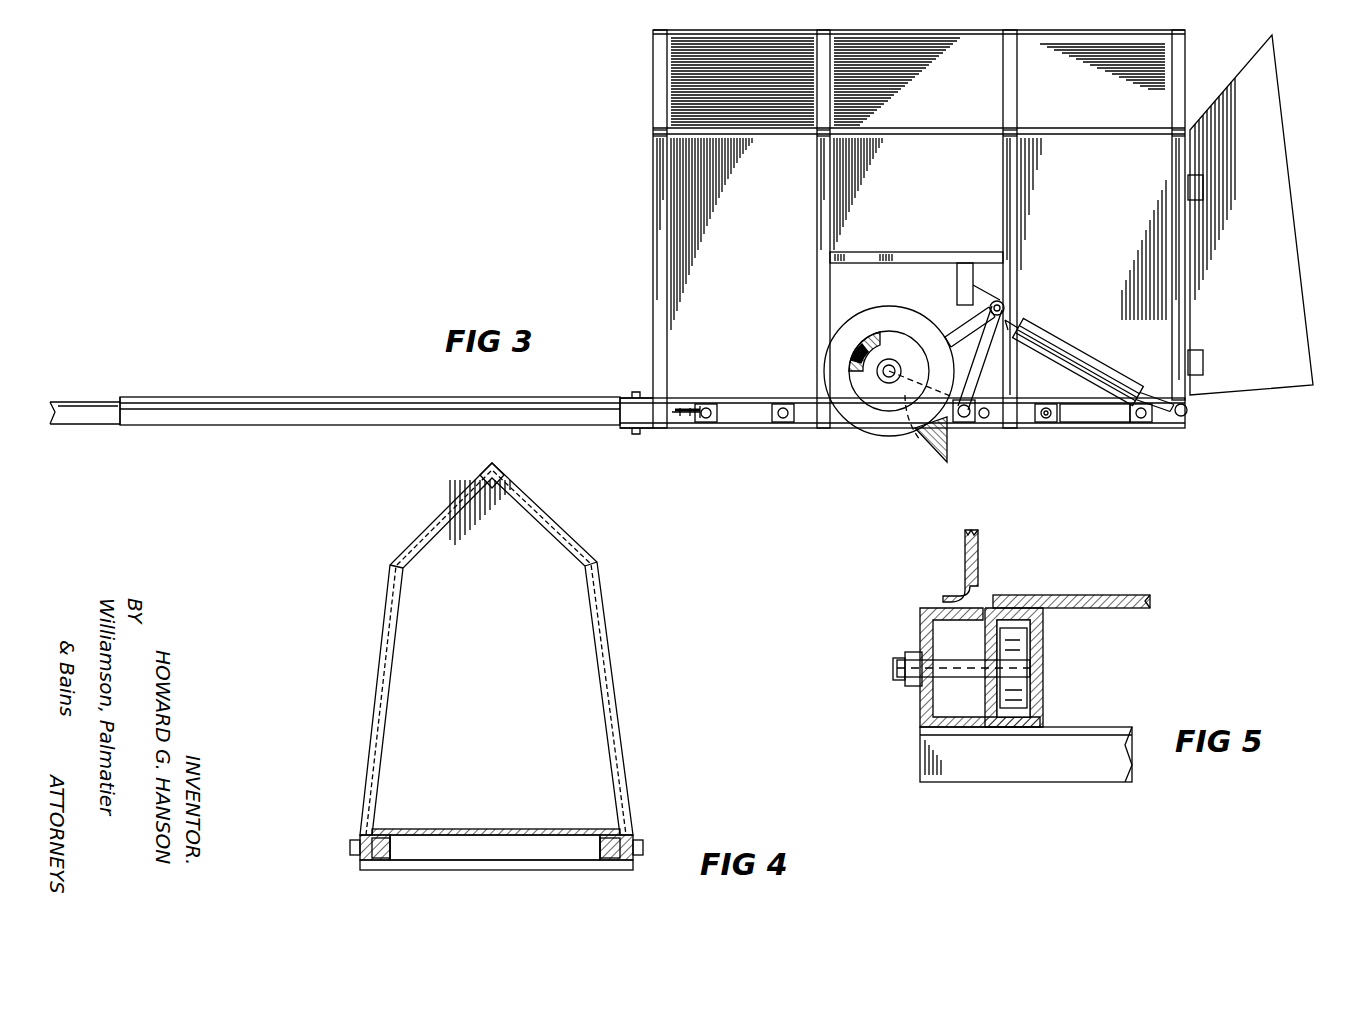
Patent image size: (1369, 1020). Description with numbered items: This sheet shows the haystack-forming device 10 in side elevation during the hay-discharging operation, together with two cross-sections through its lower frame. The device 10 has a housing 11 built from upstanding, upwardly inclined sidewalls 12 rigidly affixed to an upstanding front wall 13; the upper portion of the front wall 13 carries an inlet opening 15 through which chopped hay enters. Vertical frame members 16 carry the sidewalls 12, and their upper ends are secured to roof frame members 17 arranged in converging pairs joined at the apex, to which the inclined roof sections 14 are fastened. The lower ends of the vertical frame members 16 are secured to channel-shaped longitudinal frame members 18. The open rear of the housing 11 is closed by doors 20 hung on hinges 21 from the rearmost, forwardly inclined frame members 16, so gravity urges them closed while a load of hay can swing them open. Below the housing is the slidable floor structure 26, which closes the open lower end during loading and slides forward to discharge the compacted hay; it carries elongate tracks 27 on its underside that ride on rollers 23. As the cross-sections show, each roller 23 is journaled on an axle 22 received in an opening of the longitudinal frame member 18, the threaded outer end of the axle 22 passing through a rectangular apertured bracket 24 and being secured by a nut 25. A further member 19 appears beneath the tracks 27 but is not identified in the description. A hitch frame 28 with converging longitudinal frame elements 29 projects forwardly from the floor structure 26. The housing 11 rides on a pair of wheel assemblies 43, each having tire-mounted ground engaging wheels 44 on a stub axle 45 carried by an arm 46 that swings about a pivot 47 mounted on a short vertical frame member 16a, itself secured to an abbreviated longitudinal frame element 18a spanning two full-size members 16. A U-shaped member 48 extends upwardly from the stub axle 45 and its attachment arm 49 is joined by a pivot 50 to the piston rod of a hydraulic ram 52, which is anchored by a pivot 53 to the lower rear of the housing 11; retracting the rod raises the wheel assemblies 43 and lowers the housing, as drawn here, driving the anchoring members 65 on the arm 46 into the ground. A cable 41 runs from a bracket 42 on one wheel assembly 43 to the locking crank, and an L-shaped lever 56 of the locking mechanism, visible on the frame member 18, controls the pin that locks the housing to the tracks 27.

In FIG. 3, the haystack-forming device 10 is at (450, 142).
In FIG. 3, the housing 11 is at (650, 165).
In FIG. 4, the housing 11 is at (378, 660).
In FIG. 3, the sidewalls 12 is at (672, 245).
In FIG. 4, the sidewalls 12 is at (372, 765).
In FIG. 5, the sidewalls 12 is at (979, 570).
In FIG. 4, the front wall 13 is at (482, 650).
In FIG. 3, the roof sections 14 is at (655, 113).
In FIG. 4, the roof sections 14 is at (392, 558).
In FIG. 4, the inlet opening 15 is at (487, 505).
In FIG. 3, the vertical frame members 16 is at (654, 208).
In FIG. 4, the vertical frame members 16 is at (378, 722).
In FIG. 3, the short vertical frame member 16a is at (1013, 270).
In FIG. 3, the roof frame members 17 is at (655, 70).
In FIG. 4, the roof frame members 17 is at (427, 530).
In FIG. 3, the longitudinal frame members 18 is at (1112, 410).
In FIG. 4, the longitudinal frame members 18 is at (365, 835).
In FIG. 5, the longitudinal frame members 18 is at (935, 735).
In FIG. 3, the longitudinal frame element 18a is at (860, 258).
In FIG. 3, the floor 19 is at (637, 395).
In FIG. 4, the floor 19 is at (500, 865).
In FIG. 5, the floor 19 is at (1055, 782).
In FIG. 3, the doors 20 is at (1278, 148).
In FIG. 3, the hinges 21 is at (1204, 190).
In FIG. 5, the axle 22 is at (960, 700).
In FIG. 4, the roller 23 is at (380, 860).
In FIG. 5, the roller 23 is at (1015, 717).
In FIG. 3, the apertured bracket 24 is at (788, 404).
In FIG. 4, the apertured bracket 24 is at (352, 850).
In FIG. 5, the apertured bracket 24 is at (922, 712).
In FIG. 3, the nut 25 is at (1044, 420).
In FIG. 5, the nut 25 is at (905, 685).
In FIG. 3, the slidable floor structure 26 is at (356, 397).
In FIG. 4, the slidable floor structure 26 is at (465, 829).
In FIG. 5, the slidable floor structure 26 is at (1122, 595).
In FIG. 3, the elongate tracks 27 is at (213, 408).
In FIG. 4, the elongate tracks 27 is at (395, 845).
In FIG. 5, the elongate tracks 27 is at (1044, 672).
In FIG. 3, the hitch frame 28 is at (105, 392).
In FIG. 3, the longitudinal frame elements 29 is at (92, 422).
In FIG. 3, the cable 41 is at (960, 275).
In FIG. 3, the bracket 42 is at (990, 295).
In FIG. 3, the wheel assemblies 43 is at (858, 432).
In FIG. 3, the ground engaging wheels 44 is at (905, 400).
In FIG. 3, the stub axle 45 is at (889, 385).
In FIG. 3, the arm 46 is at (968, 402).
In FIG. 3, the pivot 47 is at (964, 422).
In FIG. 3, the U-shaped member 48 is at (950, 338).
In FIG. 3, the attachment arm 49 is at (1015, 338).
In FIG. 3, the pivot 50 is at (1005, 306).
In FIG. 3, the hydraulic ram 52 is at (1092, 352).
In FIG. 3, the pivot 53 is at (1188, 410).
In FIG. 3, the L-shaped lever 56 is at (686, 405).
In FIG. 3, the anchoring members 65 is at (947, 445).